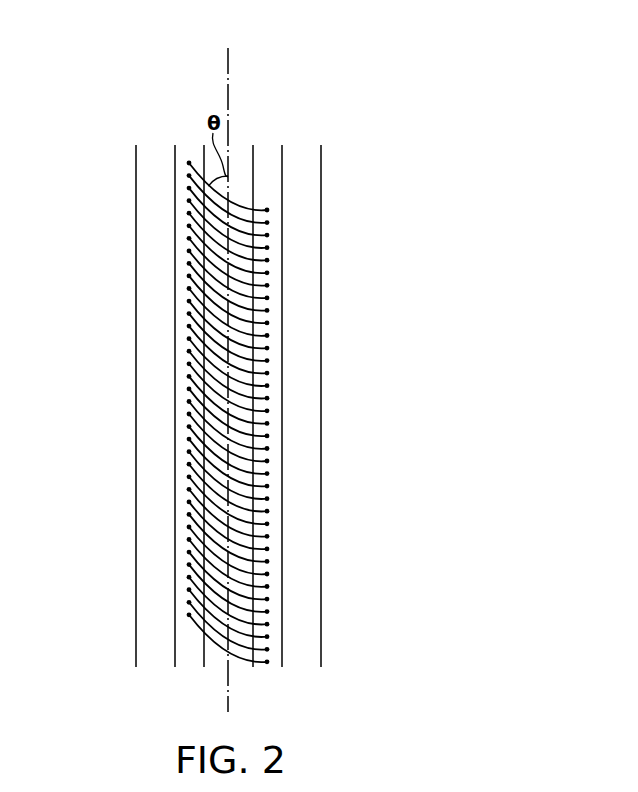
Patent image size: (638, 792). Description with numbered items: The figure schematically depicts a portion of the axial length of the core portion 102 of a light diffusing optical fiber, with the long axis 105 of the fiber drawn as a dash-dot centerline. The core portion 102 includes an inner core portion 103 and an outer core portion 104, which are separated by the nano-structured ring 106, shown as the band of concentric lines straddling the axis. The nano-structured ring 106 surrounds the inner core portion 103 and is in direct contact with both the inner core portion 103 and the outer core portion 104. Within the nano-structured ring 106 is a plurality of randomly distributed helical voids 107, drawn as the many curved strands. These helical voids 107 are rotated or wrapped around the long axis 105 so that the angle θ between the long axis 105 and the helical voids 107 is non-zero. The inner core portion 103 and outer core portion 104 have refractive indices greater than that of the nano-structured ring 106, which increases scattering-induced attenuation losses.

The core portion 102 is at (449, 238).
The inner core portion 103 is at (265, 473).
The outer core portion 104 is at (321, 398).
The long axis 105 is at (228, 75).
The nano-structured ring 106 is at (282, 291).
The helical voids 107 is at (193, 275).